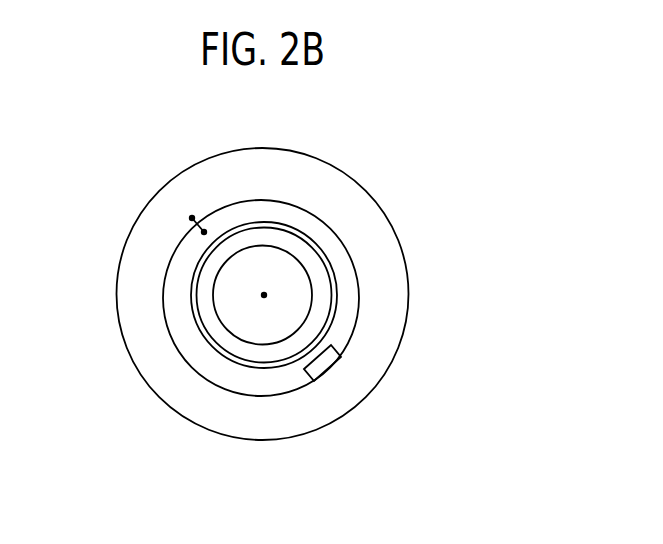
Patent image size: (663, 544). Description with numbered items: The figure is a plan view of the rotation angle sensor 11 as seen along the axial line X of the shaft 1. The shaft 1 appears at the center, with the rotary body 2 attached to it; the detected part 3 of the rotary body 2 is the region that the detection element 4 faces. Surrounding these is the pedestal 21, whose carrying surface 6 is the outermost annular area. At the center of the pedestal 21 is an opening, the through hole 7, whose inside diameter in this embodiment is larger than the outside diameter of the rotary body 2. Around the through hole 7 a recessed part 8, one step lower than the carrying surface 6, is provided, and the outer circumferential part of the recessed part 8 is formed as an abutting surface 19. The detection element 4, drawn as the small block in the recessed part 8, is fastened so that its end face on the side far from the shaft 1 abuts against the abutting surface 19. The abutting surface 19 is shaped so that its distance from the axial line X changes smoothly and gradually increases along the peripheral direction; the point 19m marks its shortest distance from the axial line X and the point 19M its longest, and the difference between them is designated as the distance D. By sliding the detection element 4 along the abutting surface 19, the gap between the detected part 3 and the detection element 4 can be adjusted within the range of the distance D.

The rotation angle sensor 11 is at (267, 309).
The shaft 1 is at (298, 311).
The rotary body 2 is at (208, 273).
The detected part 3 is at (190, 310).
The detection element 4 is at (322, 368).
The carrying surface 6 is at (150, 350).
The through hole 7 is at (210, 345).
The recessed part 8 is at (215, 368).
The abutting surface 19 is at (260, 393).
The point of longest distance 19M is at (192, 218).
The point of shortest distance 19m is at (204, 232).
The pedestal 21 is at (290, 443).
The axial line X is at (264, 295).
The distance D is at (197, 208).